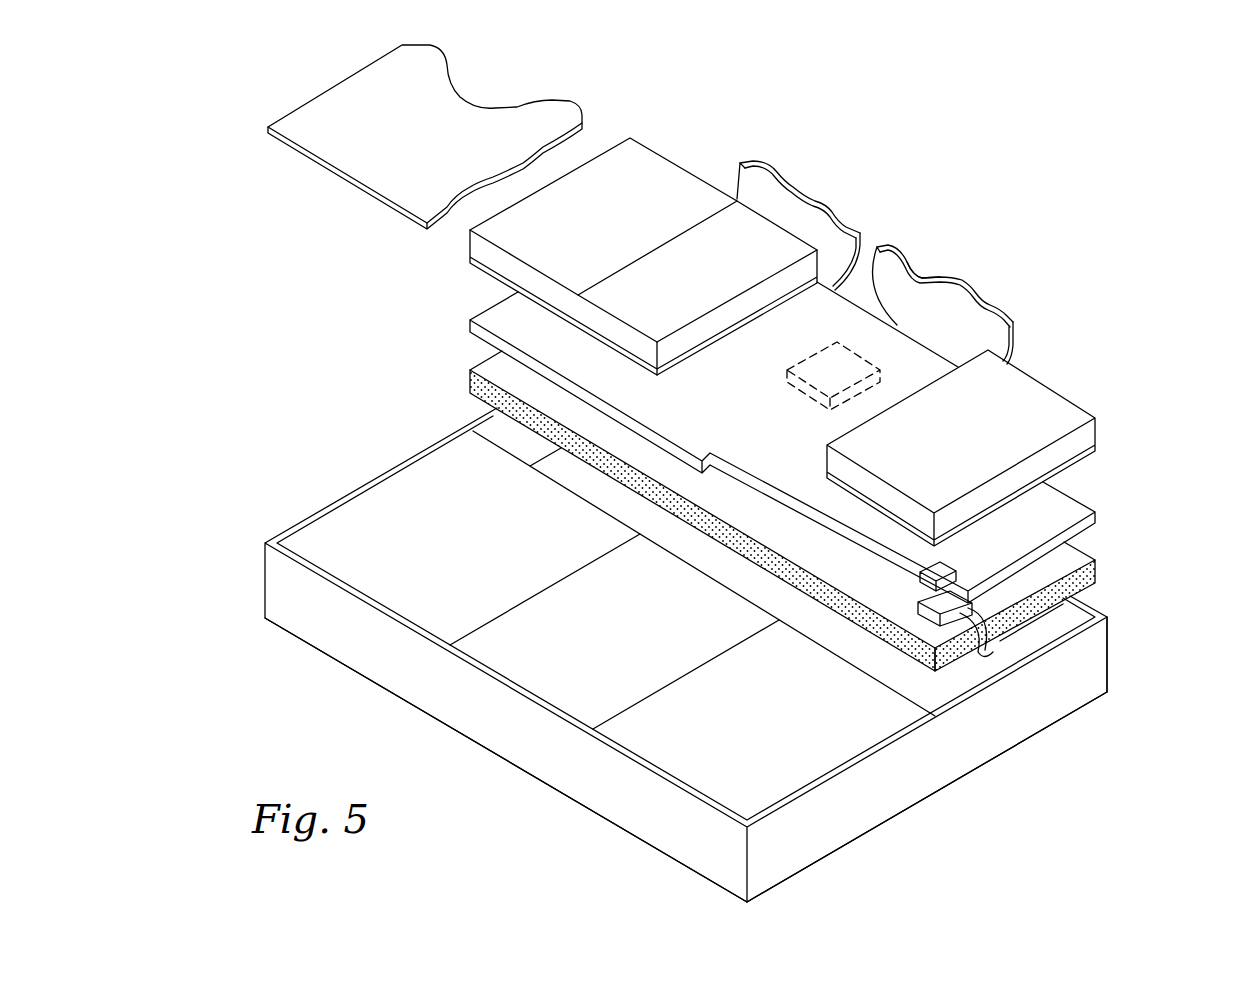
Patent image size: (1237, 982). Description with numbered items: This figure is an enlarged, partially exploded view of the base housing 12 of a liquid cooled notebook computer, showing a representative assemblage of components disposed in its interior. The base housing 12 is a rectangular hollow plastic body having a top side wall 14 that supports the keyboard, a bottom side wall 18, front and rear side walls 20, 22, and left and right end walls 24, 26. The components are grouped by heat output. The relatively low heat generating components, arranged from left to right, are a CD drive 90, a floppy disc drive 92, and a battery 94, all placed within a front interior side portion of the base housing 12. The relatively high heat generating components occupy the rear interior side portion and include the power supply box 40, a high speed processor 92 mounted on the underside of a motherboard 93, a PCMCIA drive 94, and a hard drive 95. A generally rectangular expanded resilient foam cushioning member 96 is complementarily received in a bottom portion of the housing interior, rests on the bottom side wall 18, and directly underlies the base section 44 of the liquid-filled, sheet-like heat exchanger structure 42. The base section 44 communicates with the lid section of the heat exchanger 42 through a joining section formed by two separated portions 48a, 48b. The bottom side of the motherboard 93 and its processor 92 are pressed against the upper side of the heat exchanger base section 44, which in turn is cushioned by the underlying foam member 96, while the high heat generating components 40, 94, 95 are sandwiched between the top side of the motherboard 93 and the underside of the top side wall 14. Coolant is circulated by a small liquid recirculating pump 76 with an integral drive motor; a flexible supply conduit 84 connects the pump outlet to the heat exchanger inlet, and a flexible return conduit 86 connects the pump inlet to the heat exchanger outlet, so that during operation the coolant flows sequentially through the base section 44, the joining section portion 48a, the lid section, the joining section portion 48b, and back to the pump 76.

The base housing 12 is at (1078, 740).
The top side wall 14 is at (425, 137).
The bottom side wall 18 is at (507, 762).
The front side wall 20 is at (333, 618).
The rear side wall 22 is at (1093, 605).
The left end wall 24 is at (392, 466).
The right end wall 26 is at (817, 825).
The power supply box 40 is at (978, 442).
The heat exchanger structure 42 is at (470, 300).
The base section 44 is at (468, 346).
The joining section portion 48a is at (1003, 308).
The joining section portion 48b is at (840, 210).
The liquid recirculating pump 76 is at (917, 637).
The supply conduit 84 is at (942, 573).
The return conduit 86 is at (807, 528).
The CD drive 90 is at (474, 549).
The floppy disc drive 92 is at (783, 378).
The motherboard 93 is at (923, 278).
The battery 94 is at (621, 226).
The hard drive 95 is at (714, 283).
The foam cushioning member 96 is at (1092, 565).